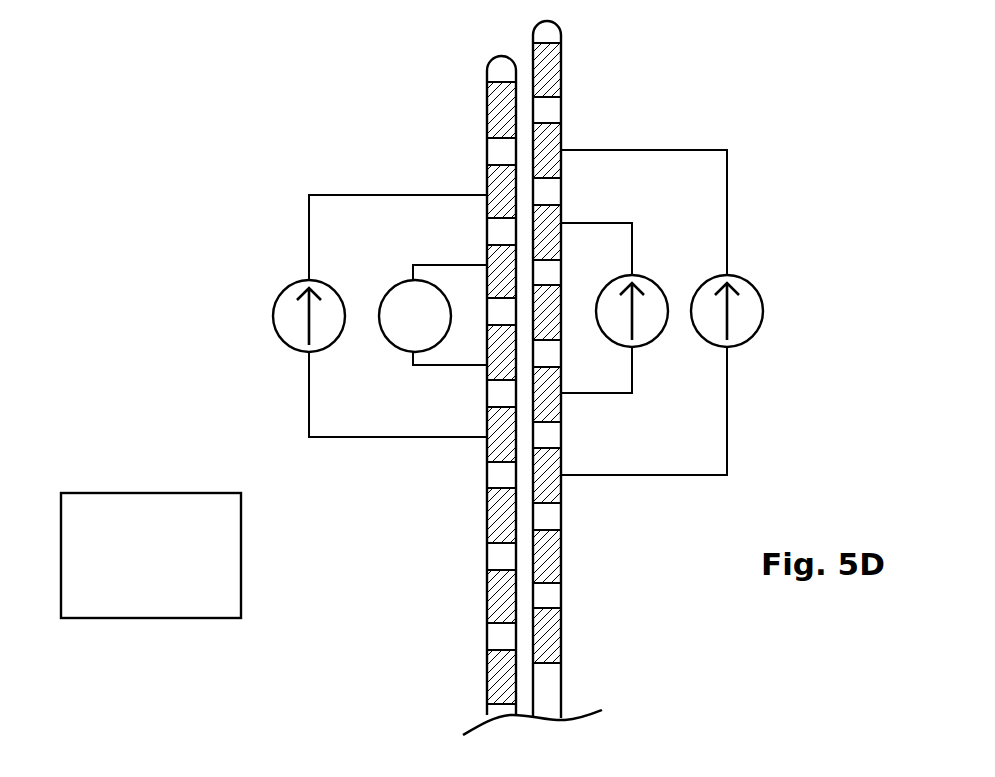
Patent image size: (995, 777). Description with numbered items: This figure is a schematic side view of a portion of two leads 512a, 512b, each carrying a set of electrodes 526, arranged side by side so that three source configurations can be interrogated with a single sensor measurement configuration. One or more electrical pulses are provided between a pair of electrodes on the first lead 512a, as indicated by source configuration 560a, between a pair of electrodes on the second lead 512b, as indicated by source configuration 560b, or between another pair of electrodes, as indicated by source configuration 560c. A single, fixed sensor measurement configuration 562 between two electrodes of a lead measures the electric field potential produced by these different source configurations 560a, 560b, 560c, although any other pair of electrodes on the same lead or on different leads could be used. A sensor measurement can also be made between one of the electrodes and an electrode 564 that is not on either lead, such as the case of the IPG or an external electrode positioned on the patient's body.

The lead 512a is at (487, 555).
The lead 512b is at (562, 600).
The electrodes 526 is at (487, 682).
The source configuration 560a is at (282, 343).
The source configuration 560b is at (644, 277).
The source configuration 560c is at (752, 283).
The sensor measurement configuration 562 is at (395, 350).
The electrode 564 is at (155, 618).